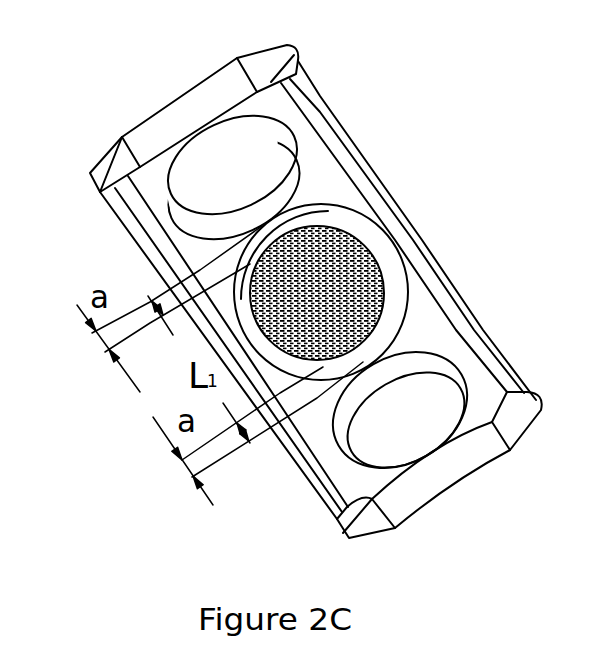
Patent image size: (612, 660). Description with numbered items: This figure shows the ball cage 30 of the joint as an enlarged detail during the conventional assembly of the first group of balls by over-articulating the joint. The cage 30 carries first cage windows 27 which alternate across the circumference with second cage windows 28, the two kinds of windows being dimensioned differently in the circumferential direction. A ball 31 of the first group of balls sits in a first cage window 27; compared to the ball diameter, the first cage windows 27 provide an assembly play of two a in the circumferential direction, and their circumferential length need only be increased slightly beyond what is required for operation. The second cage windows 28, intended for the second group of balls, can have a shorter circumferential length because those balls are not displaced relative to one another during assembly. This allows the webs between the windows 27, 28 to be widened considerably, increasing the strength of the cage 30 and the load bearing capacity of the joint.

The first cage window 27 is at (180, 118).
The second cage window 28 is at (233, 152).
The ball cage 30 is at (107, 167).
The ball of the first group of balls 31 is at (352, 234).